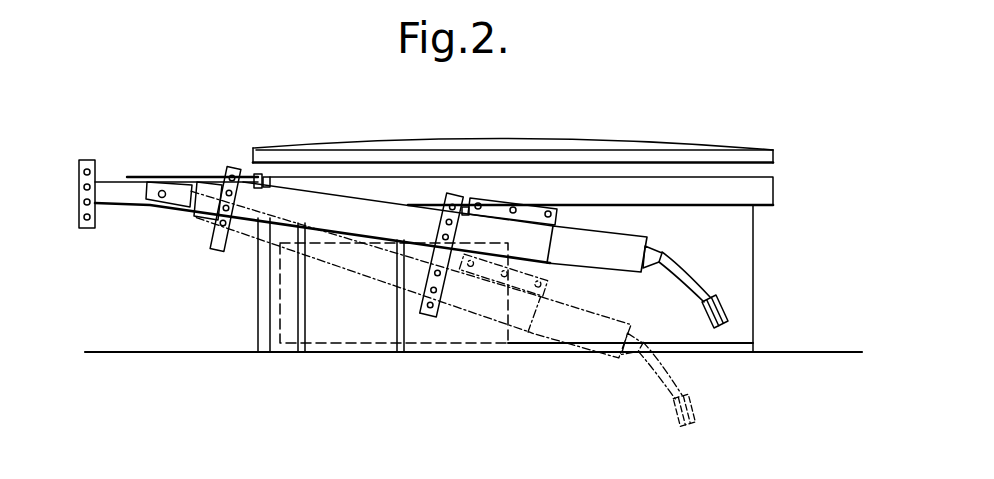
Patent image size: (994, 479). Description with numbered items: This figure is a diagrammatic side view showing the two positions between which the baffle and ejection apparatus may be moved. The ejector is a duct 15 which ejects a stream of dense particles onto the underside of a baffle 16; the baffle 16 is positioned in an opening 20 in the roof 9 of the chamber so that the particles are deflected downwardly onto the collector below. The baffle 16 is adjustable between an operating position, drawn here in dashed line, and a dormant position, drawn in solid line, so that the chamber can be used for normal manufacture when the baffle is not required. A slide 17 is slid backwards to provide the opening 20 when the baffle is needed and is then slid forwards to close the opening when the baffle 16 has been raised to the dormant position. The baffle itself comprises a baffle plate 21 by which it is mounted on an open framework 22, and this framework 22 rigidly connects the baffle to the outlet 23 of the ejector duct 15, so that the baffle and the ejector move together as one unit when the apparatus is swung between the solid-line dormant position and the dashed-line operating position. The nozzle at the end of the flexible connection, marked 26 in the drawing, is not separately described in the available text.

The roof 9 is at (167, 355).
The duct 15 is at (312, 193).
The baffle 16 is at (693, 270).
The slide 17 is at (467, 353).
The opening 20 is at (718, 355).
The baffle plate 21 is at (647, 238).
The open framework 22 is at (603, 230).
The outlet 23 is at (553, 228).
The nozzle tip 26 is at (715, 317).